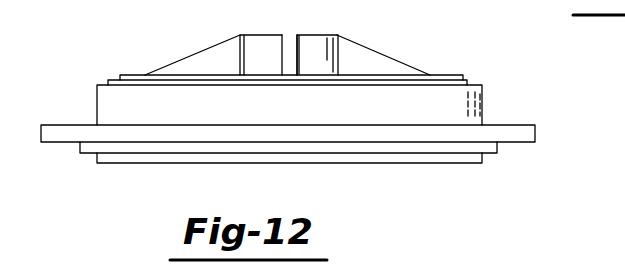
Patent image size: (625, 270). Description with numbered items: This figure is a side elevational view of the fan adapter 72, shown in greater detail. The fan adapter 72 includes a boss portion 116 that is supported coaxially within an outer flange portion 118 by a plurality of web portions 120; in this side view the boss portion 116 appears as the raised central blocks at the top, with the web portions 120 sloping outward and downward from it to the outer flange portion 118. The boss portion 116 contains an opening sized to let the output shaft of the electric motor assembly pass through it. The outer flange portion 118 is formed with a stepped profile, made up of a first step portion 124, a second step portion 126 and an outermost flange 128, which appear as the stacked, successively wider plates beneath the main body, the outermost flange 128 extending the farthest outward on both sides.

The fan adapter 72 is at (74, 113).
The boss portion 116 is at (263, 50).
The outer flange portion 118 is at (500, 118).
The web portions 120 is at (195, 65).
The first step portion 124 is at (483, 164).
The second step portion 126 is at (500, 148).
The outermost flange 128 is at (527, 133).